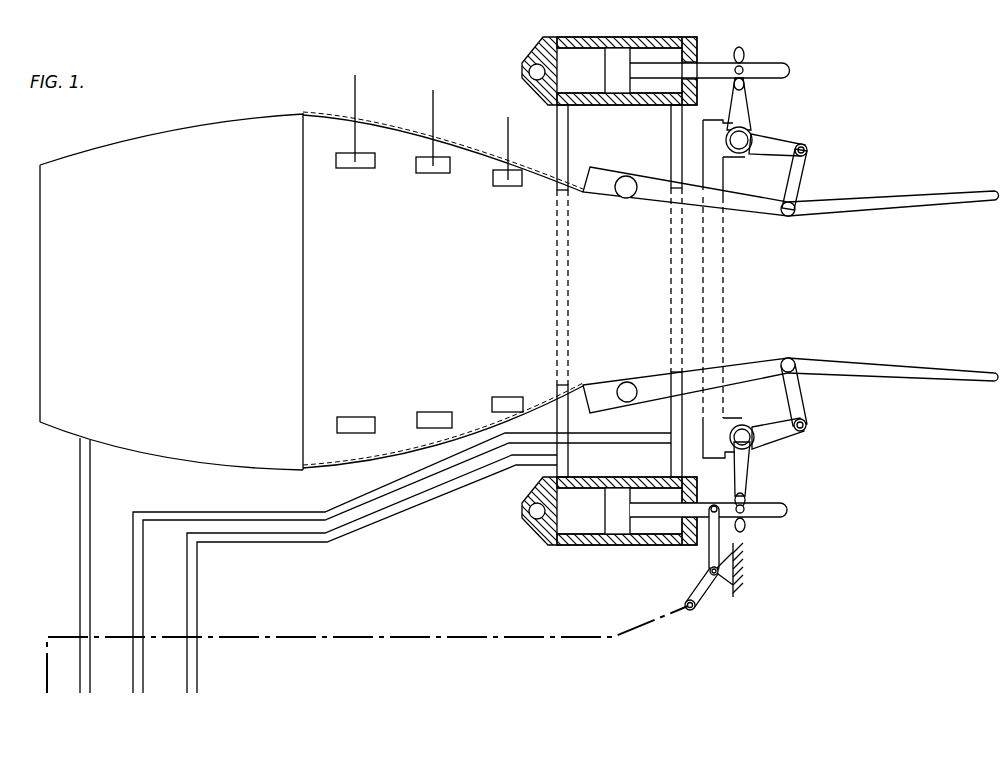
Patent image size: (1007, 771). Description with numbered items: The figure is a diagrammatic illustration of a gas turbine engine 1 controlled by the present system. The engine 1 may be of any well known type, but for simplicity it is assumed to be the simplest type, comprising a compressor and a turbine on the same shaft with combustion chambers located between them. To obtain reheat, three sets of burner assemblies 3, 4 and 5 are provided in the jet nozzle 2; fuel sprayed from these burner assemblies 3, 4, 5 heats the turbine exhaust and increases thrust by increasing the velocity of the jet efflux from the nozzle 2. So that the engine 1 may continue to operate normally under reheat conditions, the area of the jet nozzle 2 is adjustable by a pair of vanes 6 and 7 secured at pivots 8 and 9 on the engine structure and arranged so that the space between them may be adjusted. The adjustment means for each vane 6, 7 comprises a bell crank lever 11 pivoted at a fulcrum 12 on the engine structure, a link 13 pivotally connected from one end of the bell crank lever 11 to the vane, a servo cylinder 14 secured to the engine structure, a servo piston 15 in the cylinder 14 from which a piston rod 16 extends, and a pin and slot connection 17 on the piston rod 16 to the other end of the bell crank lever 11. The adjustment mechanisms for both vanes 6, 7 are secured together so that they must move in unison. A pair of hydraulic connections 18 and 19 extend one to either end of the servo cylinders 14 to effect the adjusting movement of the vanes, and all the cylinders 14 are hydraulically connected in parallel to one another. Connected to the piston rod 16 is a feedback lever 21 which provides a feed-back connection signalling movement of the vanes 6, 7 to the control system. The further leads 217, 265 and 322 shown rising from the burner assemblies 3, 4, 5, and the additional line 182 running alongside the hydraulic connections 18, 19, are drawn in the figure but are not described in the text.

The gas turbine engine 1 is at (157, 286).
The jet nozzle 2 is at (425, 288).
The burner assembly 3 is at (352, 162).
The burner assembly 4 is at (443, 165).
The burner assembly 5 is at (505, 178).
The vane 6 is at (850, 205).
The vane 7 is at (880, 372).
The pivot 8 is at (628, 192).
The pivot 9 is at (627, 385).
The bell crank lever 11 is at (775, 433).
The fulcrum 12 is at (743, 430).
The link 13 is at (805, 396).
The servo cylinder 14 is at (650, 540).
The servo piston 15 is at (612, 503).
The piston rod 16 is at (724, 507).
The pin and slot connection 17 is at (745, 508).
The hydraulic connection 18 is at (192, 622).
The hydraulic connection 19 is at (136, 622).
The feedback lever 21 is at (707, 588).
The conduit 182 is at (82, 622).
The probe lead 217 is at (352, 93).
The probe lead 265 is at (432, 113).
The probe lead 322 is at (507, 137).